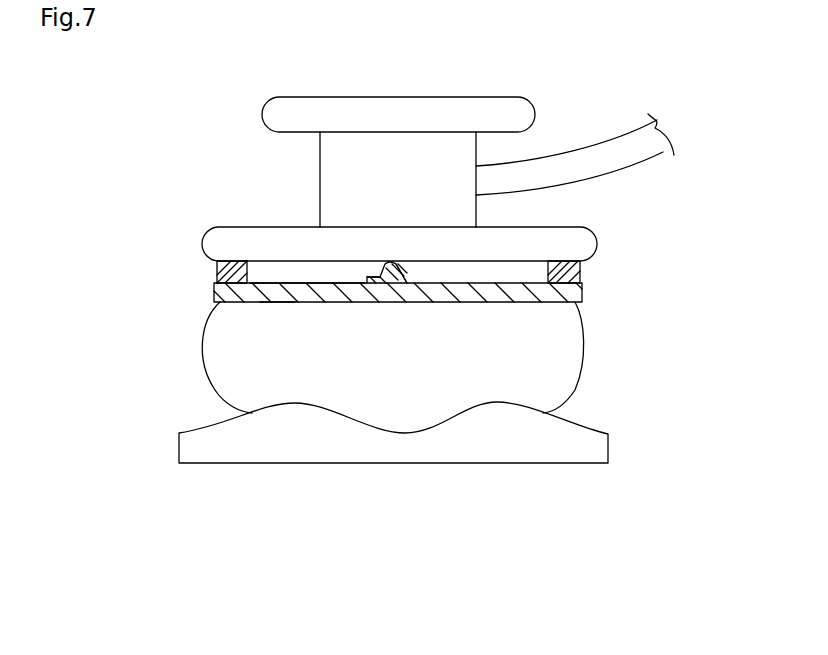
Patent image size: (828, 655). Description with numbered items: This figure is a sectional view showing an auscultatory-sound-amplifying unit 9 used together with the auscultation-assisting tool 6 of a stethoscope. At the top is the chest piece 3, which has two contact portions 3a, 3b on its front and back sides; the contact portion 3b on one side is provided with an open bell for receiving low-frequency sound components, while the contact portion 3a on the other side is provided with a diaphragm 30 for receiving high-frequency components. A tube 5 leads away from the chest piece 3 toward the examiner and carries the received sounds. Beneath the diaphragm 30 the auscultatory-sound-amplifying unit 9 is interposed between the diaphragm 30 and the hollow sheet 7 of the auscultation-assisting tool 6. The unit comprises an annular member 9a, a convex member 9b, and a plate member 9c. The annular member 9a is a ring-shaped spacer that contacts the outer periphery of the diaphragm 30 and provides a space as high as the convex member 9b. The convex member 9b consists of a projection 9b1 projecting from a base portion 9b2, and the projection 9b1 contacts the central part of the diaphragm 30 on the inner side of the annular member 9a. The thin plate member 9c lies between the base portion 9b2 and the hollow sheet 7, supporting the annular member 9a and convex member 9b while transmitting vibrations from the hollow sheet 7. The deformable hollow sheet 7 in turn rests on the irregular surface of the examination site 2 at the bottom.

The examination site 2 is at (597, 447).
The chest piece 3 is at (320, 182).
The contact portion 3a is at (202, 243).
The contact portion 3b is at (405, 97).
The tube 5 is at (612, 141).
The auscultation-assisting tool 6 is at (435, 357).
The hollow sheet 7 is at (553, 335).
The auscultatory-sound-amplifying unit 9 is at (438, 411).
The annular member 9a is at (548, 277).
The convex member 9b is at (351, 424).
The projection 9b1 is at (370, 272).
The base portion 9b2 is at (407, 275).
The plate member 9c is at (302, 262).
The diaphragm 30 is at (277, 312).